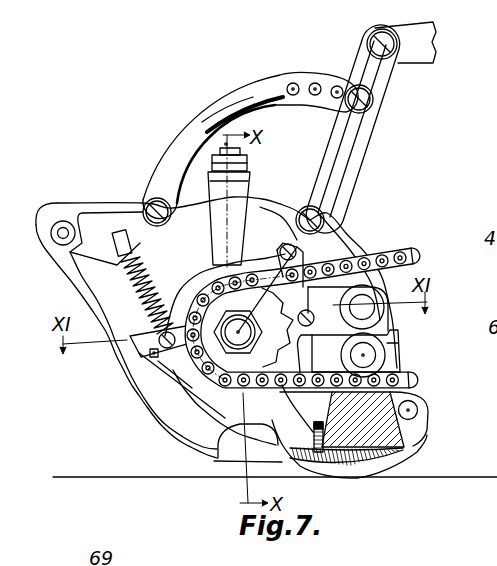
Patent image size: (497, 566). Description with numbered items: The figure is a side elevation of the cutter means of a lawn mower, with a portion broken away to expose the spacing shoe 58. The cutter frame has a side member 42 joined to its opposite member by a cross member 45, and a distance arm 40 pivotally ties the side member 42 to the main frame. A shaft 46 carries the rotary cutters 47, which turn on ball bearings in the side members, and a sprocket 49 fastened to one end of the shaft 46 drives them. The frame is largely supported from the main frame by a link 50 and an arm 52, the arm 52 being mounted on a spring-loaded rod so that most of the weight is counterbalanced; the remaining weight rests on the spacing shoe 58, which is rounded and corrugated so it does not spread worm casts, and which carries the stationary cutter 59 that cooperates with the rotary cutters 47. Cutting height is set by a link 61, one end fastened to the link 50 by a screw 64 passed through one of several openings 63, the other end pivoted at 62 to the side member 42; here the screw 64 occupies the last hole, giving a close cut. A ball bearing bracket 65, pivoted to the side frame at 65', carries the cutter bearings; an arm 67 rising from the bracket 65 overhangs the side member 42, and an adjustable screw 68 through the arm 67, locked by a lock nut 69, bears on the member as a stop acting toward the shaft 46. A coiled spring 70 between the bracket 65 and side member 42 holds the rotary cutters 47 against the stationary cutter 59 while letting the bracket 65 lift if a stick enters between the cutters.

The distance arm 40 is at (398, 360).
The side member 42 is at (99, 275).
The cross member 45 is at (426, 430).
The shaft 46 is at (332, 287).
The rotary cutters 47 is at (311, 430).
The sprocket 49 is at (229, 383).
The link 50 is at (350, 152).
The arm 52 is at (423, 37).
The spacing shoe 58 is at (344, 482).
The stationary cutter 59 is at (250, 452).
The link 61 is at (182, 138).
The pivotal connection 62 is at (145, 205).
The openings 63 is at (335, 86).
The screw 64 is at (374, 102).
The ball bearing bracket 65 is at (212, 336).
The pivot 65' is at (375, 341).
The arm 67 is at (249, 183).
The adjustable screw 68 is at (241, 152).
The lock nut 69 is at (248, 161).
The coiled spring 70 is at (143, 274).